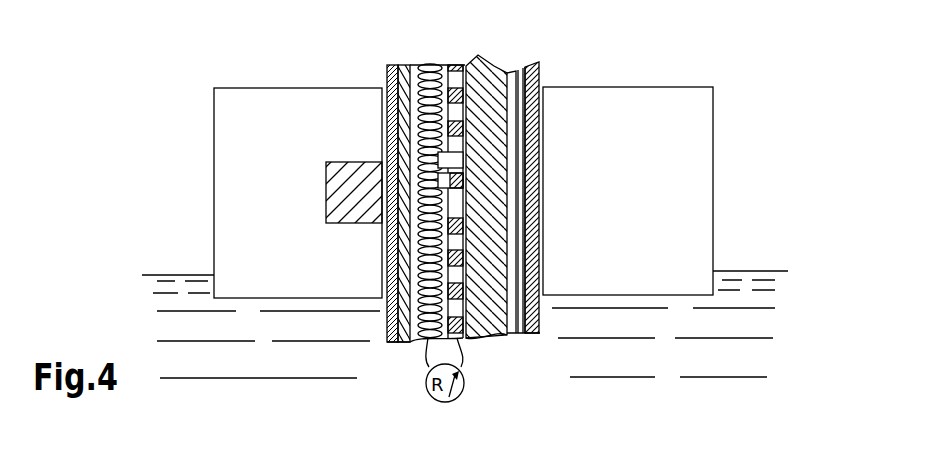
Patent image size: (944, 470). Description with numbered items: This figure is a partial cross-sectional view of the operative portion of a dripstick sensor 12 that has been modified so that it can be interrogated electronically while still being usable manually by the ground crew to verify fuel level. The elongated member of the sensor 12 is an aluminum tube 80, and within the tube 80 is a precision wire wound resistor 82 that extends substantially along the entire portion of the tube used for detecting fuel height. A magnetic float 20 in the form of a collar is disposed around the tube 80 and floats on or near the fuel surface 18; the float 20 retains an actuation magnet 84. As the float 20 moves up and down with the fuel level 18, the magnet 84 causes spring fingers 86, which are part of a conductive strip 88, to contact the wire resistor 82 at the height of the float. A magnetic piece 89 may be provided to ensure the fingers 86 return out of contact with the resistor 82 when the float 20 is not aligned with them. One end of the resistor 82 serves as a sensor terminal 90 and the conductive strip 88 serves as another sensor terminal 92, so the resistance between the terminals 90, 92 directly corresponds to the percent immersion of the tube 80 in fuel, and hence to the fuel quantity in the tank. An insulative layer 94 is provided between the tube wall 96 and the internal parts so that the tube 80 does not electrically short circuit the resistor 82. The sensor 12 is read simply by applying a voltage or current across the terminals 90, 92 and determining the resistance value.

The dripstick sensor 12 is at (686, 53).
The fuel surface 18 is at (746, 258).
The magnetic float 20 is at (700, 158).
The aluminum tube 80 is at (539, 320).
The precision wire wound resistor 82 is at (414, 38).
The actuation magnet 84 is at (314, 195).
The spring fingers 86 is at (442, 153).
The conductive strip 88 is at (455, 38).
The magnetic piece 89 is at (480, 85).
The sensor terminal 90 is at (425, 363).
The sensor terminal 92 is at (468, 362).
The insulative layer 94 is at (401, 322).
The tube wall 96 is at (389, 293).